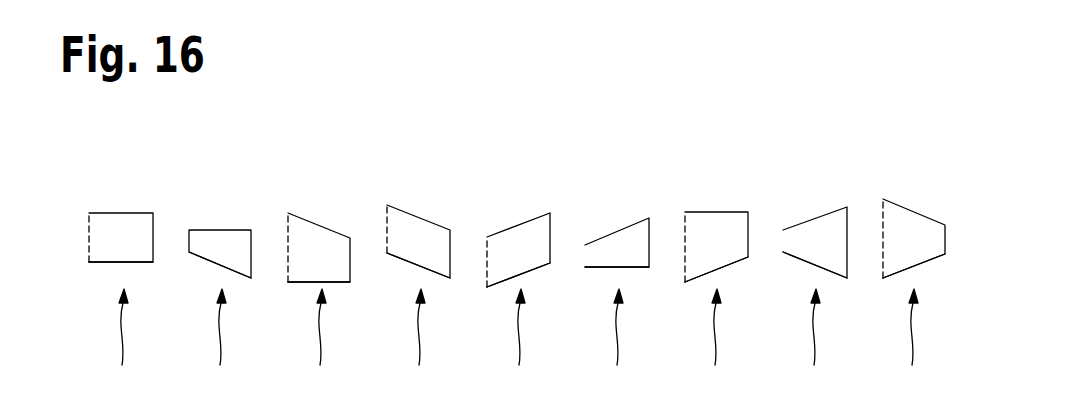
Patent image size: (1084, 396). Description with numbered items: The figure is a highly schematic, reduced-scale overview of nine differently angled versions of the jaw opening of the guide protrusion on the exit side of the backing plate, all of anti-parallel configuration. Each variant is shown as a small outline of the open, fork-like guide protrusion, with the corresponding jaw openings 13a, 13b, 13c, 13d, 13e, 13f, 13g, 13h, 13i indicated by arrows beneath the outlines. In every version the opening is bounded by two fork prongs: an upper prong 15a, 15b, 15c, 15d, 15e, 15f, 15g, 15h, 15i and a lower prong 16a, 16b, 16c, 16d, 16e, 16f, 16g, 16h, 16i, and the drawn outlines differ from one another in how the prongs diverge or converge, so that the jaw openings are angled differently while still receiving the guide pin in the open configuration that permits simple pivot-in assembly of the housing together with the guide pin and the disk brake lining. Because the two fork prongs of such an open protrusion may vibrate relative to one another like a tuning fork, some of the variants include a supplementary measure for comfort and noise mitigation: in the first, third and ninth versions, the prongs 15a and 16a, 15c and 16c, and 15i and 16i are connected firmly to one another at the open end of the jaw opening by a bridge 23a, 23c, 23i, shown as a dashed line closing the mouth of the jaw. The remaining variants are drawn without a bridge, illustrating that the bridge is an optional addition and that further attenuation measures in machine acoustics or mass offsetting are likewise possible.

The jaw opening 13a is at (128, 342).
The jaw opening 13b is at (226, 342).
The jaw opening 13c is at (326, 342).
The jaw opening 13d is at (424, 342).
The jaw opening 13e is at (523, 342).
The jaw opening 13f is at (623, 342).
The jaw opening 13g is at (720, 342).
The jaw opening 13h is at (819, 342).
The jaw opening 13i is at (917, 342).
The fork prong 15a is at (133, 213).
The fork prong 15b is at (233, 230).
The fork prong 15c is at (332, 230).
The fork prong 15d is at (431, 222).
The fork prong 15e is at (531, 220).
The fork prong 15f is at (629, 226).
The fork prong 15g is at (724, 212).
The fork prong 15h is at (826, 214).
The fork prong 15i is at (926, 217).
The fork prong 16a is at (133, 262).
The fork prong 16b is at (233, 270).
The fork prong 16c is at (332, 282).
The fork prong 16d is at (431, 270).
The fork prong 16e is at (531, 270).
The fork prong 16f is at (629, 267).
The fork prong 16g is at (729, 264).
The fork prong 16h is at (827, 270).
The fork prong 16i is at (927, 261).
The bridge 23a is at (89, 230).
The bridge 23c is at (288, 228).
The bridge 23i is at (883, 218).